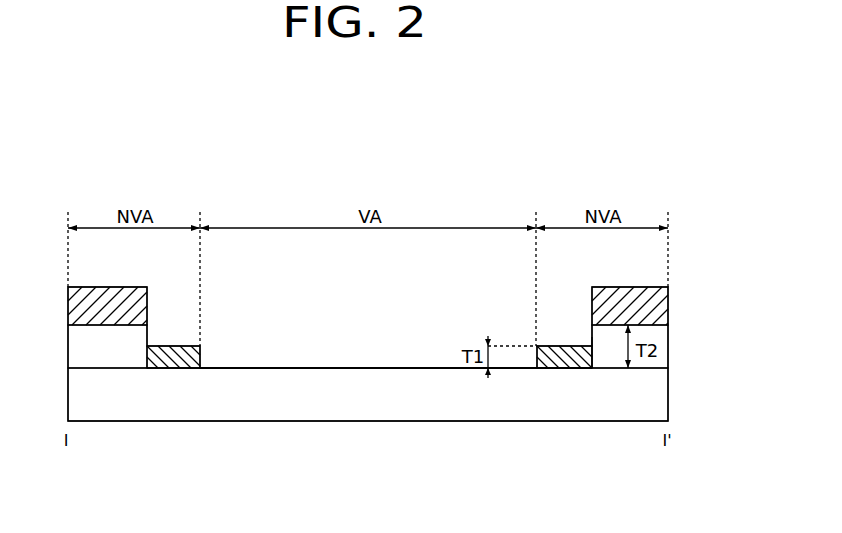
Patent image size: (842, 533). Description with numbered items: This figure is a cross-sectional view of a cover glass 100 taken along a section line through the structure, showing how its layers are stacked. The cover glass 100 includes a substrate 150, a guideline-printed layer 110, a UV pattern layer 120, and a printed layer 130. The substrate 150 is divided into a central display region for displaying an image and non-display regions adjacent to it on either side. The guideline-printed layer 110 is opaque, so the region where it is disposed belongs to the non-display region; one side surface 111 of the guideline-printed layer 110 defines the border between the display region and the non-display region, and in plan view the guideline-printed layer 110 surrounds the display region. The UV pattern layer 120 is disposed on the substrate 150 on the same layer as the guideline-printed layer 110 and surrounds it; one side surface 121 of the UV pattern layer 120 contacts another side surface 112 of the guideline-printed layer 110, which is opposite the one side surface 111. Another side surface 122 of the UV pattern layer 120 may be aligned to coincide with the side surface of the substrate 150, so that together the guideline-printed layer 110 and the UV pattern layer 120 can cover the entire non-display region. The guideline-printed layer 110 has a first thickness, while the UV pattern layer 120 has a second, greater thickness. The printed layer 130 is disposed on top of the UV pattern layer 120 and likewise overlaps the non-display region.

The cover glass 100 is at (626, 118).
The guideline-printed layer 110 is at (542, 368).
The one side surface of the guideline-printed layer 111 is at (536, 362).
The another side surface of the guideline-printed layer 112 is at (565, 368).
The UV pattern layer 120 is at (658, 362).
The one side surface of the UV pattern layer 121 is at (592, 337).
The another side surface of the UV pattern layer 122 is at (668, 333).
The printed layer 130 is at (657, 304).
The substrate 150 is at (655, 395).